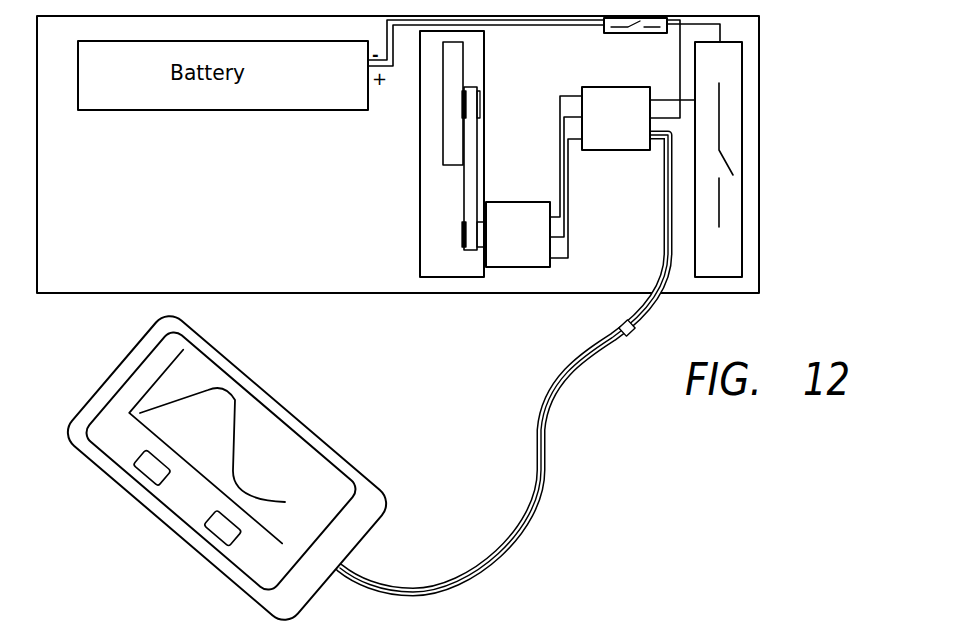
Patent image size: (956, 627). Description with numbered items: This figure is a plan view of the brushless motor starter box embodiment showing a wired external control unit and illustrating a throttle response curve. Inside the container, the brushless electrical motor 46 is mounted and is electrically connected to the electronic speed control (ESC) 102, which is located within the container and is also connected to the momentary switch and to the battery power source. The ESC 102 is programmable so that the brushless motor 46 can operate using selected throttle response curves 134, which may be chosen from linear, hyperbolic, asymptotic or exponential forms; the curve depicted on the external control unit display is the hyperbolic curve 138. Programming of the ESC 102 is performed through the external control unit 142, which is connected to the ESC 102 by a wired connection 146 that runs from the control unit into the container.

The electronic speed control (ESC) 102 is at (627, 95).
The brushless electrical motor 46 is at (513, 238).
The throttle response curves 134 is at (236, 450).
The hyperbolic throttle response curve 138 is at (210, 390).
The external control unit 142 is at (225, 570).
The wired connection 146 is at (545, 481).